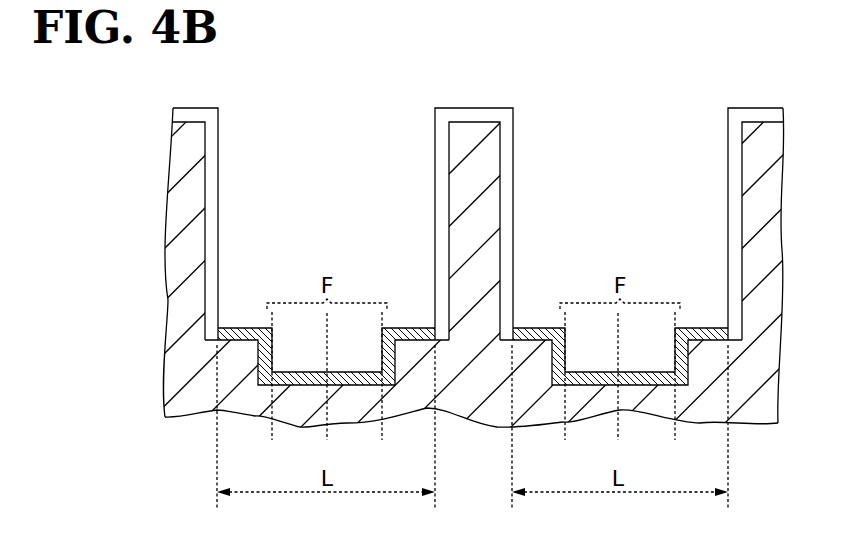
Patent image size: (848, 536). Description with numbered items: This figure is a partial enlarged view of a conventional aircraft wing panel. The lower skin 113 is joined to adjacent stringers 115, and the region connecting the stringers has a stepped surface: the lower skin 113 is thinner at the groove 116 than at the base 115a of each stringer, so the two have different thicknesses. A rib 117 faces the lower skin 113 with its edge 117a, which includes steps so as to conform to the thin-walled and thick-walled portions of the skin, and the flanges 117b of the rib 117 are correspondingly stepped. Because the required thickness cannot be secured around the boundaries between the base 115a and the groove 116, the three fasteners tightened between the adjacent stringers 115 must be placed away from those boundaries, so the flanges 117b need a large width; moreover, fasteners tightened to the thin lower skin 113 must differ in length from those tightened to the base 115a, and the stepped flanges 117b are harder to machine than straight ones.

The lower skin 113 is at (470, 398).
The stringer 115 is at (218, 155).
The base 115a is at (237, 326).
The groove 116 is at (388, 352).
The rib 117 is at (740, 83).
The edge 117a is at (470, 110).
The flange 117b is at (278, 365).